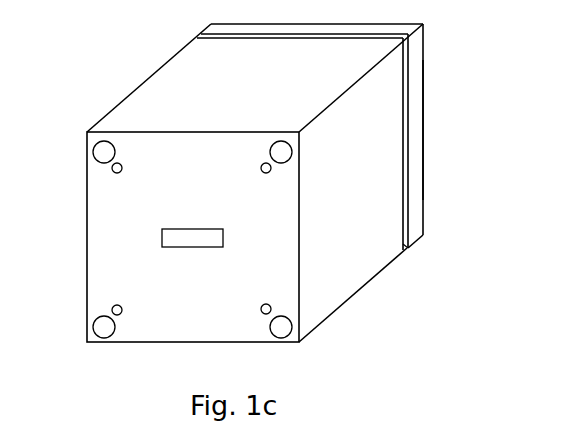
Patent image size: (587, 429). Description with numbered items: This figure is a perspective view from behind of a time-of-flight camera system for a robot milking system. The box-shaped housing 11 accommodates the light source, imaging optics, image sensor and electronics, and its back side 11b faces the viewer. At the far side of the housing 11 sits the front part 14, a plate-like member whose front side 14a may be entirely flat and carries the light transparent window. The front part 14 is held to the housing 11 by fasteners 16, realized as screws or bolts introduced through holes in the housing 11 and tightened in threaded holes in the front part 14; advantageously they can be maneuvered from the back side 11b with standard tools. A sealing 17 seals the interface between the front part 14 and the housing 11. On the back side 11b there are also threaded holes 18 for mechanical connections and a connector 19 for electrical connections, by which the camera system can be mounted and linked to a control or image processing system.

The housing 11 is at (340, 308).
The back side of the housing 11b is at (95, 242).
The front part 14 is at (413, 243).
The front side 14a is at (423, 146).
The fasteners 16 is at (106, 141).
The sealing 17 is at (406, 253).
The threaded holes 18 is at (122, 170).
The connector 19 is at (223, 238).